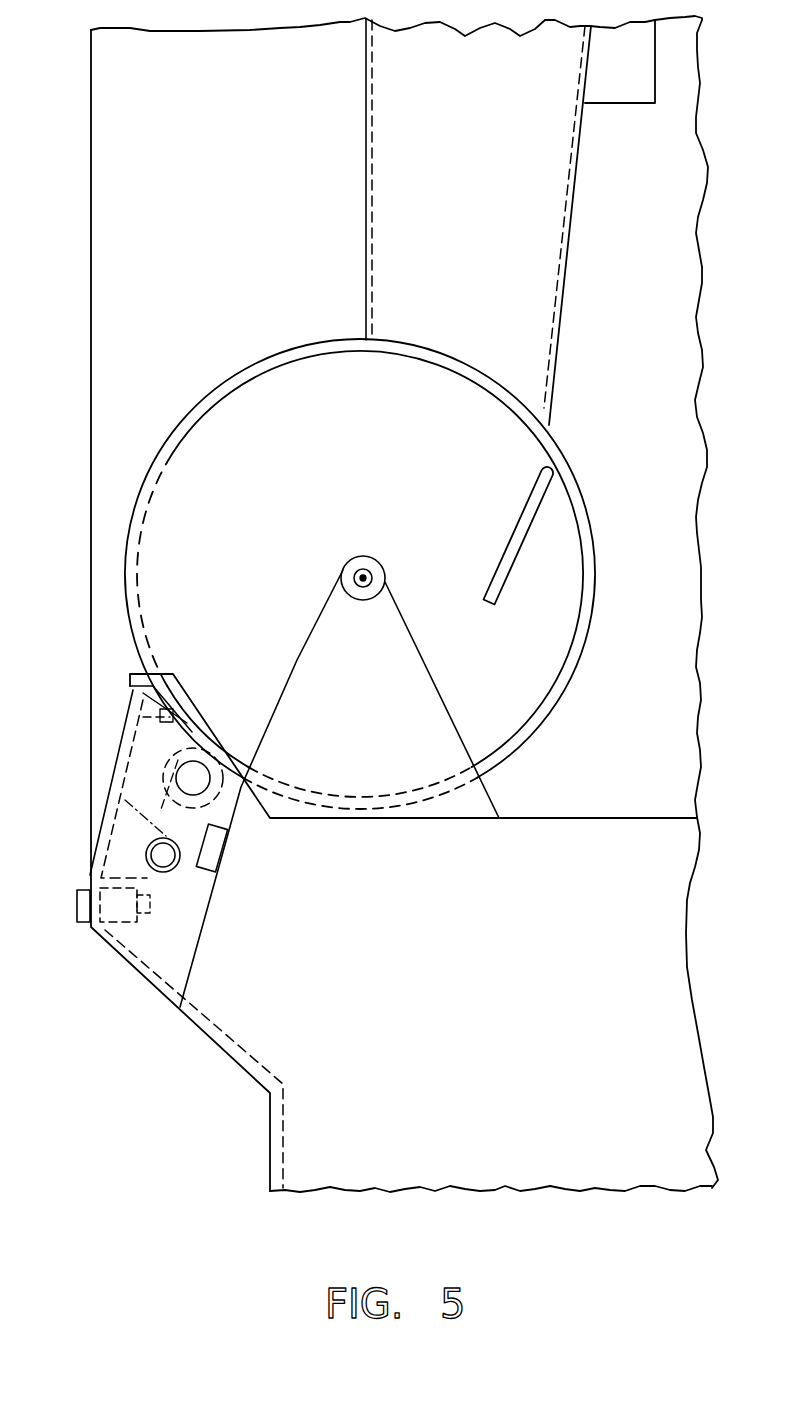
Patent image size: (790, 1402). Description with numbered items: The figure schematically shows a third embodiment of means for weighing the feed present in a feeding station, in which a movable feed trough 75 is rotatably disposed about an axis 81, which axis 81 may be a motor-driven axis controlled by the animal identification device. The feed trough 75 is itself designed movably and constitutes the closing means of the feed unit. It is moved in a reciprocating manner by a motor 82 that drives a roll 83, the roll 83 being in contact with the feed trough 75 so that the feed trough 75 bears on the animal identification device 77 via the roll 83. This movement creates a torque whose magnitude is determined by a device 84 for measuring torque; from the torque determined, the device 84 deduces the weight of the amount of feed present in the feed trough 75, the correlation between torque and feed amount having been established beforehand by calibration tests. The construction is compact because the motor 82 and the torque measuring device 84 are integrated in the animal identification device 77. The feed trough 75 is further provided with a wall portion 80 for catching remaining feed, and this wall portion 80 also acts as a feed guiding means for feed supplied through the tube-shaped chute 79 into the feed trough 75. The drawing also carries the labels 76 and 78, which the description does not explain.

The feed trough 75 is at (562, 675).
The wheel 76 is at (287, 358).
The animal identification device 77 is at (155, 943).
The bracket 78 is at (621, 75).
The tube-shaped chute 79 is at (548, 227).
The wall portion 80 is at (523, 502).
The axis 81 is at (368, 565).
The motor 82 is at (172, 868).
The roll 83 is at (217, 788).
The device for measuring the magnitude of the torque 84 is at (212, 850).